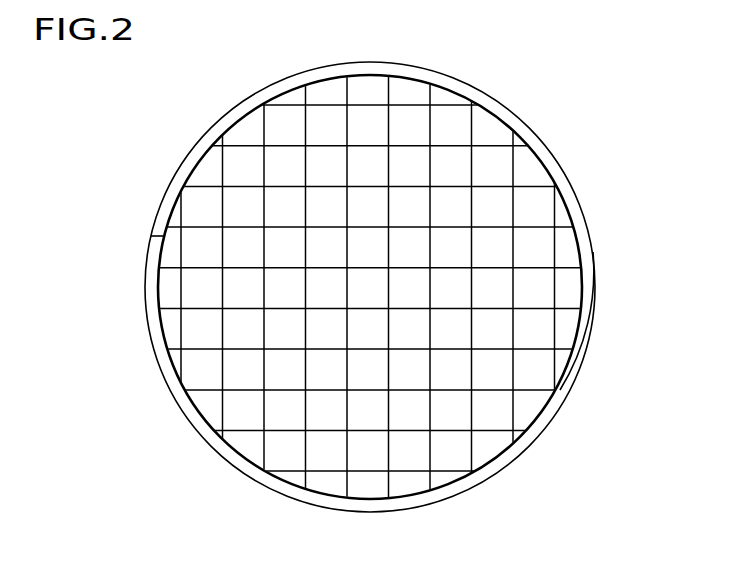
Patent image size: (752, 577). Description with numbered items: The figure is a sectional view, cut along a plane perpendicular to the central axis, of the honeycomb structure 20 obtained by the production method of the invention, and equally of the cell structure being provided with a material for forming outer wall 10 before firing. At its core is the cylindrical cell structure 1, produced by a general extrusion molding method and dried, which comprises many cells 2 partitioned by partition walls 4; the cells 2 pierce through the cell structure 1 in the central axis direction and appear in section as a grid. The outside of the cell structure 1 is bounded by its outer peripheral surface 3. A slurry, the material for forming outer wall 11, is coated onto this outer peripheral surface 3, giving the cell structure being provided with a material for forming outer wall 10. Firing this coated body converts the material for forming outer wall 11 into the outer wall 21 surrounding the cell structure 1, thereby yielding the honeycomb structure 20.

The cell structure 1 is at (590, 319).
The cells 2 is at (447, 448).
The outer peripheral surface 3 is at (151, 236).
The partition walls 4 is at (352, 460).
The cell structure being provided with a material for forming outer wall 10 is at (386, 287).
The honeycomb structure 20 is at (548, 121).
The material for forming outer wall 11 is at (625, 310).
The outer wall 21 is at (593, 252).